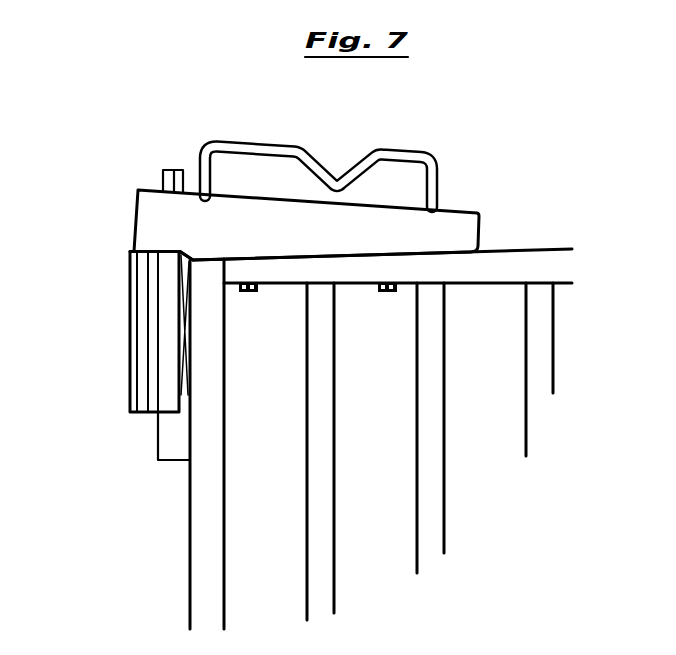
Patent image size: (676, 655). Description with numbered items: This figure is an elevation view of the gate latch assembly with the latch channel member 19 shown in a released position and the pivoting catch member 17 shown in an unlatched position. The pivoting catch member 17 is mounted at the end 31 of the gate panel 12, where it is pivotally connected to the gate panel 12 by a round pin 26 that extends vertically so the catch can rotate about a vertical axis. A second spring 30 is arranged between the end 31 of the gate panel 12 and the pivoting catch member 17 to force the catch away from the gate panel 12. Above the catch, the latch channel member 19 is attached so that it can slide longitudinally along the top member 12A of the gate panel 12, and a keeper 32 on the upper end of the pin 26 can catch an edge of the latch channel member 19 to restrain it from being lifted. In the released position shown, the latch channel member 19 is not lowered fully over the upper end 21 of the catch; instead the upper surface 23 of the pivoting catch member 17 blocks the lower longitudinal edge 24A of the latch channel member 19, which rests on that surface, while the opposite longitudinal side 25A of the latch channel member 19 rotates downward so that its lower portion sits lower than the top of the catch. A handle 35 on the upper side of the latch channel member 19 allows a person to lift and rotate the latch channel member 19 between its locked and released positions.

The gate panel 12 is at (550, 347).
The top member 12A is at (530, 248).
The pivoting catch member 17 is at (128, 355).
The latch channel member 19 is at (453, 227).
The upper end 21 is at (163, 262).
The upper surface 23 is at (135, 248).
The lower longitudinal edge 24A is at (165, 267).
The longitudinal side 25A is at (163, 233).
The round pin 26 is at (163, 169).
The second spring 30 is at (182, 358).
The end 31 is at (188, 532).
The keeper 32 is at (182, 170).
The handle 35 is at (248, 145).